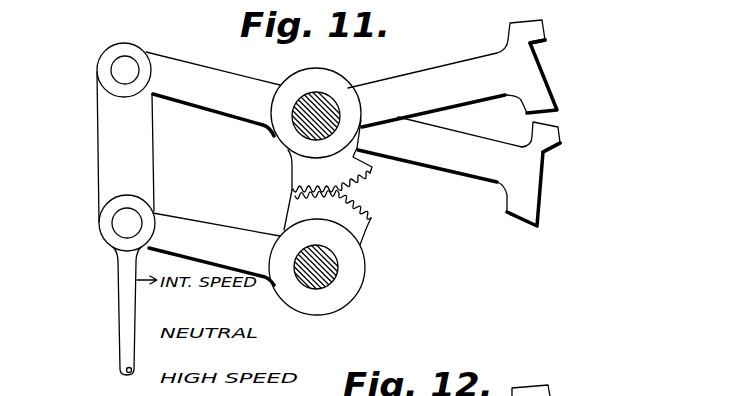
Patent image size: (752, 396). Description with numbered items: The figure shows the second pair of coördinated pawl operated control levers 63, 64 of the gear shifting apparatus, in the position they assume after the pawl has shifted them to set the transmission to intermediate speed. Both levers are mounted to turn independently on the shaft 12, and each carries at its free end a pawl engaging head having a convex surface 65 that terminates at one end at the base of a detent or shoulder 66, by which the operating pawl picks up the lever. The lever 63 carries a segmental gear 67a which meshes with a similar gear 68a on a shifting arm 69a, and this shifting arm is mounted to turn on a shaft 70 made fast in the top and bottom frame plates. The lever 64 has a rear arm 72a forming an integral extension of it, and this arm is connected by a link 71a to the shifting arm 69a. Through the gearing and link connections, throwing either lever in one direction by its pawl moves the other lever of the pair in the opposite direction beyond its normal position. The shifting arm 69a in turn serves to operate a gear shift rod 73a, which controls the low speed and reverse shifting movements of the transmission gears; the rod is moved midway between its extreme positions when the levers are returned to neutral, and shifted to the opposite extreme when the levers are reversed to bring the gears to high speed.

The shaft 12 is at (316, 93).
The control lever 63 is at (428, 70).
The control lever 64 is at (490, 184).
The convex surface 65 is at (553, 98).
The detent or shoulder 66 is at (547, 44).
The segmental gear 67a is at (358, 182).
The gear 68a is at (343, 225).
The shifting arm 69a is at (190, 220).
The shaft 70 is at (327, 272).
The link 71a is at (100, 146).
The arm 72a is at (221, 63).
The gear shift rod 73a is at (118, 298).